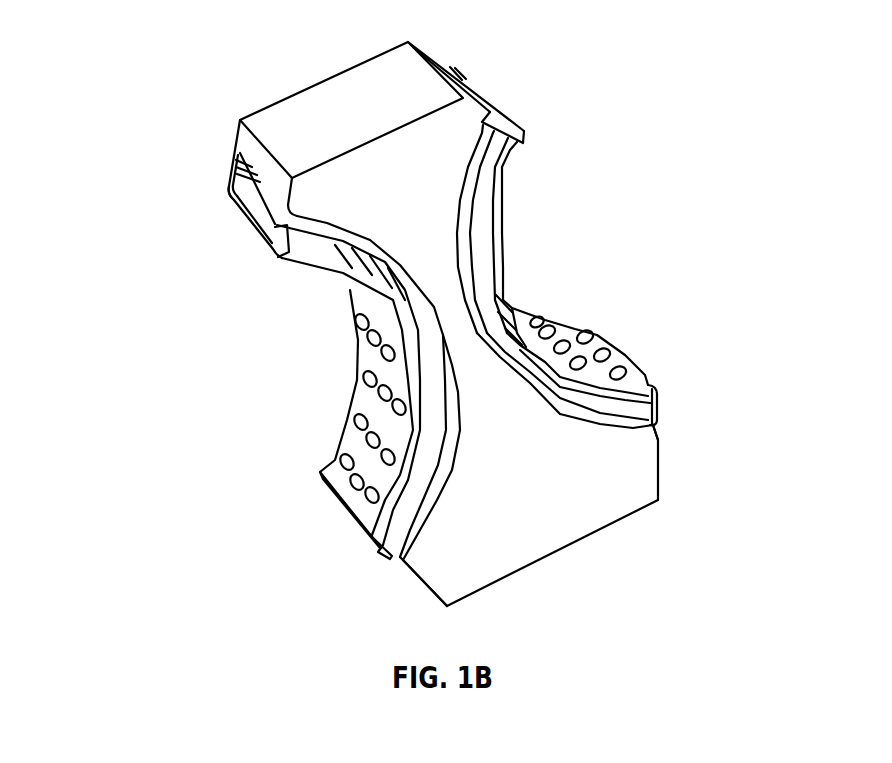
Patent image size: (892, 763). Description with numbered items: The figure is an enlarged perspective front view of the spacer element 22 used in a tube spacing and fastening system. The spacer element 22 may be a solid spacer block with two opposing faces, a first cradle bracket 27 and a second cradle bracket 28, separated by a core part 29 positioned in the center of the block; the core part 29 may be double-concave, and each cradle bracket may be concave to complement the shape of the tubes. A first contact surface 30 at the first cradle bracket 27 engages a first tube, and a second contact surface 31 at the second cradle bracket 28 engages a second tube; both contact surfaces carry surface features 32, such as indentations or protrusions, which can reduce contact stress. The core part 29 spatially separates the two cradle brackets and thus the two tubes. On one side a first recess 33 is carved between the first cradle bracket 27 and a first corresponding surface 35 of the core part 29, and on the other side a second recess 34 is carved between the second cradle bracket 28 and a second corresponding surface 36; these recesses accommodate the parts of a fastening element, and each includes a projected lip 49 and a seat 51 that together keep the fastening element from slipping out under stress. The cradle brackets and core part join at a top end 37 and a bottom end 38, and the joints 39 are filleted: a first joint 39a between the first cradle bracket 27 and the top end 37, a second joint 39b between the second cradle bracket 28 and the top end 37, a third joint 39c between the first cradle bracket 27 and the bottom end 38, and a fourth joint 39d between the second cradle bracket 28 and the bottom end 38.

The spacer element 22 is at (160, 71).
The first cradle bracket 27 is at (337, 516).
The second cradle bracket 28 is at (652, 371).
The core part 29 is at (475, 416).
The first contact surface 30 is at (346, 403).
The second contact surface 31 is at (544, 306).
The surface features 32 is at (346, 460).
The first recess 33 is at (232, 161).
The second recess 34 is at (505, 117).
The first corresponding surface 35 is at (417, 543).
The second corresponding surface 36 is at (597, 428).
The top end 37 is at (343, 85).
The bottom end 38 is at (641, 511).
The joints 39 is at (501, 78).
The first exemplary joint 39a is at (214, 191).
The second exemplary joint 39b is at (459, 48).
The third exemplary joint 39c is at (674, 476).
The fourth exemplary joint 39d is at (407, 596).
The projected lip 49 is at (275, 237).
The seat 51 is at (260, 217).